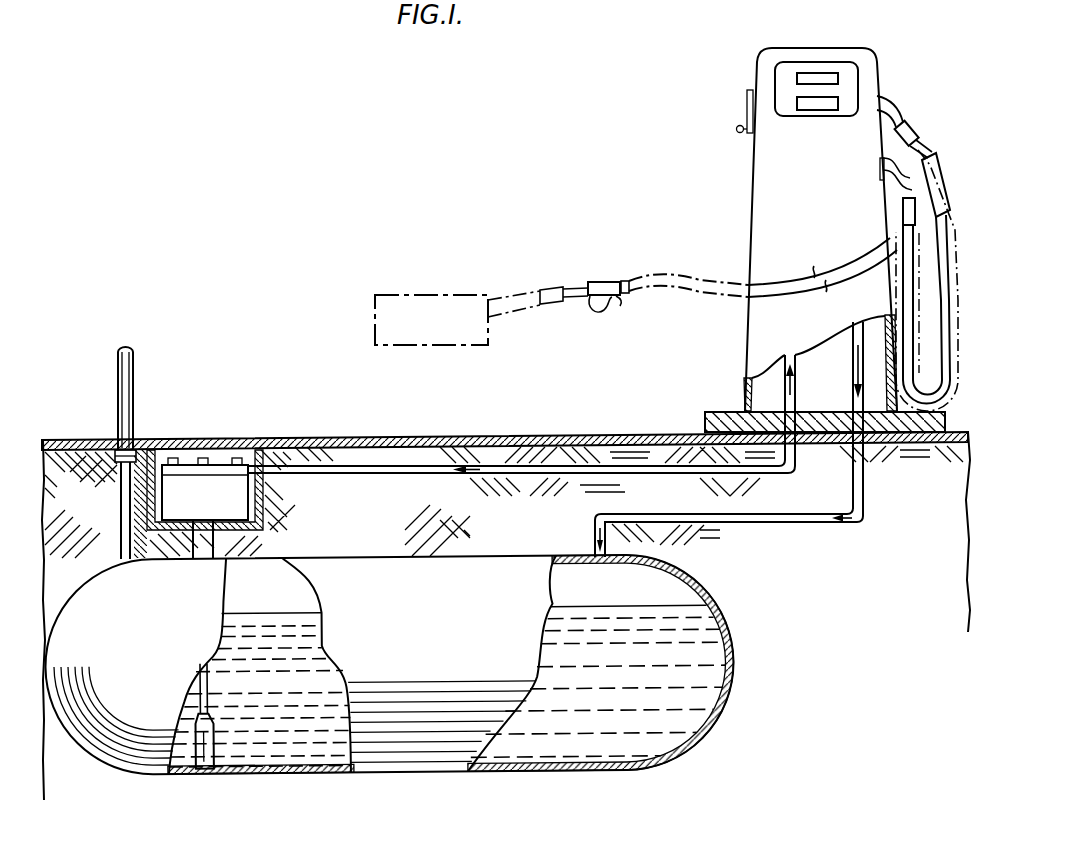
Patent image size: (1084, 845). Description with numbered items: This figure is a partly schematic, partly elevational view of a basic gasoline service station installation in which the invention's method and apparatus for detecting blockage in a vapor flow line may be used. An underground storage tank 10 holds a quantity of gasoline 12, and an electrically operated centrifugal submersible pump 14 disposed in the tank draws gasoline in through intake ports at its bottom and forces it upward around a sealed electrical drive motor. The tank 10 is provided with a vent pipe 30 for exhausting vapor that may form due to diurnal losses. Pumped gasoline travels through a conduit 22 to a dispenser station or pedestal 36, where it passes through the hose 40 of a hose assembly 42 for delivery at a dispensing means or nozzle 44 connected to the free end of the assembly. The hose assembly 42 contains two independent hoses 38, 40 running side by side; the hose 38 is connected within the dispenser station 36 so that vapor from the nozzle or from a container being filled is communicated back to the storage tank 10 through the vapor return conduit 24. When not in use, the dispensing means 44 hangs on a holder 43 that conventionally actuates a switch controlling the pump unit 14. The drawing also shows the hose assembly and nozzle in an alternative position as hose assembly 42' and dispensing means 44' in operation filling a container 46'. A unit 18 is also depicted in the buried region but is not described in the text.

The underground storage tank 10 is at (447, 660).
The gasoline 12 is at (288, 695).
The submersible pump 14 is at (213, 735).
The control unit 18 is at (216, 509).
The conduit 22 is at (746, 394).
The vapor return conduit 24 is at (852, 352).
The vent pipe 30 is at (122, 374).
The dispenser station 36 is at (768, 180).
The hose 38 is at (937, 172).
The hose 40 is at (880, 164).
The hose assembly 42 is at (869, 219).
The holder 43 is at (881, 130).
The dispensing means 44 is at (915, 116).
The hose assembly 42' is at (763, 267).
The dispensing means 44' is at (584, 272).
The container 46' is at (457, 298).